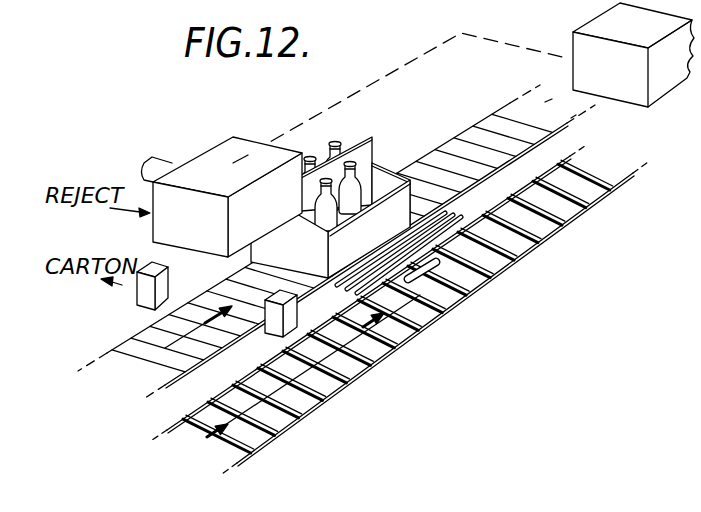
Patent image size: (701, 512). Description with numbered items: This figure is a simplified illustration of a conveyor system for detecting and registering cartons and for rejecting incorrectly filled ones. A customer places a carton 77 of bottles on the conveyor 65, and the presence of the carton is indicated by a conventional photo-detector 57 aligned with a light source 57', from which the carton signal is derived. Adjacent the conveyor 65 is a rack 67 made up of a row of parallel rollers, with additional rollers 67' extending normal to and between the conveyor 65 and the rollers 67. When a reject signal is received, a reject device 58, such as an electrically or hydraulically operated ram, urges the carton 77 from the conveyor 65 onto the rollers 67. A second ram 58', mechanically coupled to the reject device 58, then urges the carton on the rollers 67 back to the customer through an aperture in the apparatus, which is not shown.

The photo-detector 57 is at (125, 300).
The light source 57' is at (249, 337).
The reject device 58 is at (222, 197).
The ram 58' is at (633, 55).
The conveyor 65 is at (163, 365).
The rack 67 is at (400, 310).
The additional rollers 67' is at (409, 199).
The carton 77 is at (300, 262).